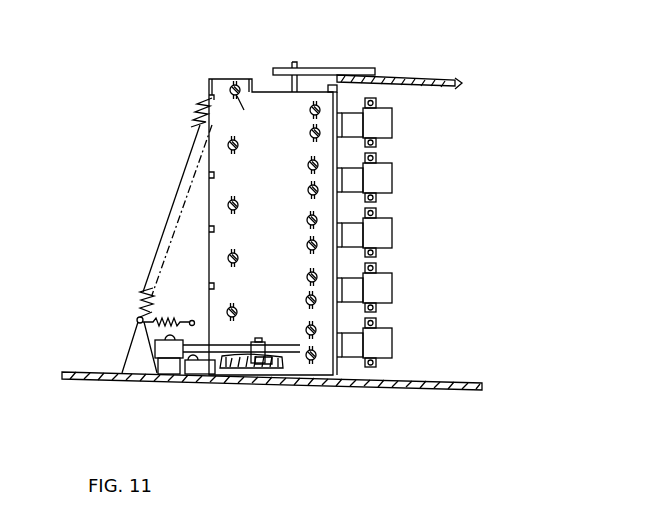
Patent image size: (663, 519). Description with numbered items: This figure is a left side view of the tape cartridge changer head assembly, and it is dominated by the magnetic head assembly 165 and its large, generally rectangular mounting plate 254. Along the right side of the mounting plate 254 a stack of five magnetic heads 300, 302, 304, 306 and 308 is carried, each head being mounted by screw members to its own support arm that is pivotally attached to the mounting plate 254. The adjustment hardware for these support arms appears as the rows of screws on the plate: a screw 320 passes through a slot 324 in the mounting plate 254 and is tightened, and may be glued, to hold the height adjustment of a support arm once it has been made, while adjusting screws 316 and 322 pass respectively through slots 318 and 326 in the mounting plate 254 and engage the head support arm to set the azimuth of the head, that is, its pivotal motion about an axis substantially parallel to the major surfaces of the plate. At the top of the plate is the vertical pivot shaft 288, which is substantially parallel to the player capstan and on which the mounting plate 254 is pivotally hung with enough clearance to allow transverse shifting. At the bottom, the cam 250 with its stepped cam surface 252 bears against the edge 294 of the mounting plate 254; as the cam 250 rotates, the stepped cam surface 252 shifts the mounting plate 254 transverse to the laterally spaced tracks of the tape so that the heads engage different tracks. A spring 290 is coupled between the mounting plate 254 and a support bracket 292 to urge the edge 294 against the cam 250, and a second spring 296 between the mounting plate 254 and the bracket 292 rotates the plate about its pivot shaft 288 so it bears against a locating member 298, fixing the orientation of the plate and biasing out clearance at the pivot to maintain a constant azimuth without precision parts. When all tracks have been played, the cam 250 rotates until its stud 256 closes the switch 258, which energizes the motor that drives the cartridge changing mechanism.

The magnetic head assembly 165 is at (228, 70).
The mounting plate 254 is at (252, 92).
The vertical pivot shaft 288 is at (297, 65).
The spring 290 is at (198, 112).
The slot 324 is at (233, 106).
The screw 320 is at (251, 105).
The slot 318 is at (311, 106).
The adjusting screw 316 is at (309, 120).
The adjusting screw 322 is at (307, 140).
The slot 326 is at (305, 170).
The magnetic head 300 is at (383, 125).
The magnetic head 302 is at (383, 178).
The magnetic head 304 is at (383, 234).
The magnetic head 306 is at (383, 289).
The magnetic head 308 is at (383, 343).
The second spring 296 is at (170, 313).
The support bracket 292 is at (132, 347).
The switch 258 is at (170, 350).
The locating member 298 is at (203, 367).
The cam 250 is at (250, 368).
The stud 256 is at (256, 337).
The stepped cam surface 252 is at (267, 358).
The edge of the mounting plate 294 is at (311, 373).